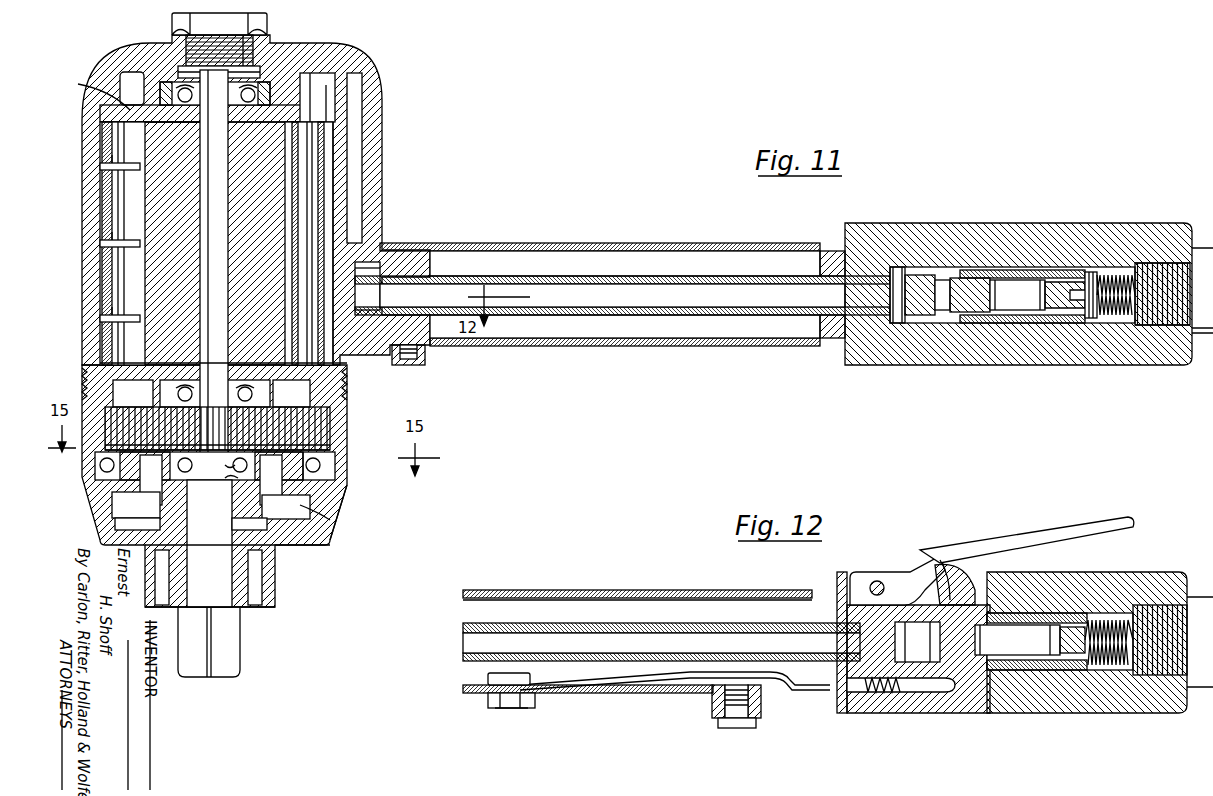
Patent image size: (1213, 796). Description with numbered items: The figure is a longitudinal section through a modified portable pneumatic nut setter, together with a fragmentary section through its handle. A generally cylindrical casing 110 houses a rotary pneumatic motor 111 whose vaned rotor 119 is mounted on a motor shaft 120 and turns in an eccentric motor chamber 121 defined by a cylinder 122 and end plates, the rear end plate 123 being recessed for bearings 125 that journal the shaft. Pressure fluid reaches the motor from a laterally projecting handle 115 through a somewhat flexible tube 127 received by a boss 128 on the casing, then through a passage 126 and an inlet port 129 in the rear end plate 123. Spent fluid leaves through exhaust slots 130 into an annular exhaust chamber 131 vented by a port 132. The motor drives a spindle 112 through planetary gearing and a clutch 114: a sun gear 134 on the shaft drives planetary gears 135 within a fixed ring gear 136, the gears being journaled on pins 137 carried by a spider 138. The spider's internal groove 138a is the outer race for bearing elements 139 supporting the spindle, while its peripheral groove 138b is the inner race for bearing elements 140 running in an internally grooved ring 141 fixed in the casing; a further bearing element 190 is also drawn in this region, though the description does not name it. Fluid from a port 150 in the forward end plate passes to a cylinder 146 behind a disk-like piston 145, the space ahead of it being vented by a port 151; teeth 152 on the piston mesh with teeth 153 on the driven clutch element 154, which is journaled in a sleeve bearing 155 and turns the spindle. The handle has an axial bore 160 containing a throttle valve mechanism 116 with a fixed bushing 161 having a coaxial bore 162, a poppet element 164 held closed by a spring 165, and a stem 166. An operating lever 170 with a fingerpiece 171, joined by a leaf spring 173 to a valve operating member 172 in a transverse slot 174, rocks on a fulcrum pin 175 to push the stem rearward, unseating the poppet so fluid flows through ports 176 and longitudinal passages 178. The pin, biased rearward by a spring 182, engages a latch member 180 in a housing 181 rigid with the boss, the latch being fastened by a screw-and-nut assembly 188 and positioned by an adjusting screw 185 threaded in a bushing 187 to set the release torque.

In FIG. 11, the casing 110 is at (116, 56).
In FIG. 11, the rotary pneumatic motor 111 is at (133, 88).
In FIG. 11, the spindle 112 is at (241, 638).
In FIG. 11, the clutch 114 is at (300, 548).
In FIG. 11, the handle 115 is at (672, 241).
In FIG. 11, the throttle valve mechanism 116 is at (1014, 241).
In FIG. 11, the vaned rotor 119 is at (137, 125).
In FIG. 11, the motor shaft 120 is at (222, 207).
In FIG. 11, the motor chamber 121 is at (100, 108).
In FIG. 11, the cylinder 122 is at (100, 130).
In FIG. 11, the rear end plate 123 is at (84, 392).
In FIG. 11, the bearings 125 is at (255, 88).
In FIG. 11, the passage 126 is at (355, 172).
In FIG. 11, the tube 127 is at (597, 277).
In FIG. 11, the boss 128 is at (410, 250).
In FIG. 11, the inlet port 129 is at (308, 108).
In FIG. 11, the exhaust slots 130 is at (108, 166).
In FIG. 11, the annular exhaust chamber 131 is at (102, 204).
In FIG. 11, the port 132 is at (102, 280).
In FIG. 11, the sun gear 134 is at (220, 464).
In FIG. 11, the planetary gears 135 is at (320, 430).
In FIG. 11, the ring gear 136 is at (330, 443).
In FIG. 11, the pins 137 is at (305, 512).
In FIG. 11, the spider 138 is at (316, 482).
In FIG. 11, the internal groove 138a is at (209, 543).
In FIG. 11, the peripheral groove 138b is at (322, 466).
In FIG. 11, the anti-friction bearing elements 139 is at (222, 478).
In FIG. 11, the anti-friction bearing elements 140 is at (322, 476).
In FIG. 11, the internally grooved ring 141 is at (336, 454).
In FIG. 11, the piston 145 is at (318, 530).
In FIG. 11, the cylinder 146 is at (320, 540).
In FIG. 11, the port 150 is at (140, 373).
In FIG. 11, the port 151 is at (100, 541).
In FIG. 11, the teeth 152 is at (160, 520).
In FIG. 11, the teeth 153 is at (278, 572).
In FIG. 11, the driven clutch element 154 is at (278, 585).
In FIG. 11, the sleeve bearing 155 is at (275, 600).
In FIG. 11, the axial bore 160 is at (965, 268).
In FIG. 11, the bushing 161 is at (920, 275).
In FIG. 11, the bore 162 is at (1043, 280).
In FIG. 11, the poppet element 164 is at (1103, 275).
In FIG. 11, the spring 165 is at (1143, 275).
In FIG. 11, the stem 166 is at (1006, 310).
In FIG. 12, the operating lever 170 is at (973, 546).
In FIG. 12, the fingerpiece 171 is at (1095, 525).
In FIG. 11, the valve operating member 172 is at (957, 315).
In FIG. 12, the valve operating member 172 is at (968, 705).
In FIG. 12, the leaf spring 173 is at (1012, 556).
In FIG. 11, the slot 174 is at (930, 312).
In FIG. 12, the slot 174 is at (992, 600).
In FIG. 12, the pin 175 is at (935, 700).
In FIG. 11, the ports 176 is at (1068, 315).
In FIG. 11, the longitudinal passages 178 is at (1052, 325).
In FIG. 12, the latch member 180 is at (675, 692).
In FIG. 11, the housing 181 is at (590, 343).
In FIG. 12, the housing 181 is at (700, 590).
In FIG. 12, the spring 182 is at (875, 700).
In FIG. 12, the adjusting screw 185 is at (737, 728).
In FIG. 12, the bushing 187 is at (758, 700).
In FIG. 12, the screw-and-nut assembly 188 is at (512, 712).
In FIG. 11, the ball bearing 190 is at (92, 466).